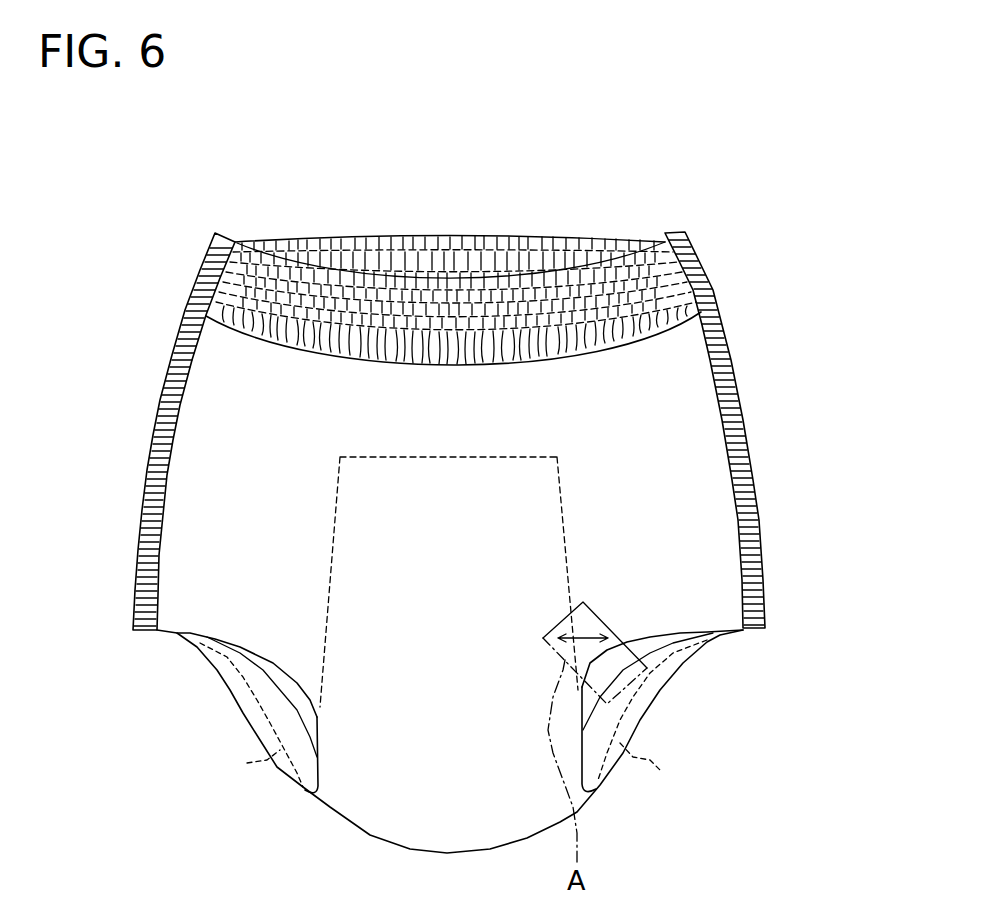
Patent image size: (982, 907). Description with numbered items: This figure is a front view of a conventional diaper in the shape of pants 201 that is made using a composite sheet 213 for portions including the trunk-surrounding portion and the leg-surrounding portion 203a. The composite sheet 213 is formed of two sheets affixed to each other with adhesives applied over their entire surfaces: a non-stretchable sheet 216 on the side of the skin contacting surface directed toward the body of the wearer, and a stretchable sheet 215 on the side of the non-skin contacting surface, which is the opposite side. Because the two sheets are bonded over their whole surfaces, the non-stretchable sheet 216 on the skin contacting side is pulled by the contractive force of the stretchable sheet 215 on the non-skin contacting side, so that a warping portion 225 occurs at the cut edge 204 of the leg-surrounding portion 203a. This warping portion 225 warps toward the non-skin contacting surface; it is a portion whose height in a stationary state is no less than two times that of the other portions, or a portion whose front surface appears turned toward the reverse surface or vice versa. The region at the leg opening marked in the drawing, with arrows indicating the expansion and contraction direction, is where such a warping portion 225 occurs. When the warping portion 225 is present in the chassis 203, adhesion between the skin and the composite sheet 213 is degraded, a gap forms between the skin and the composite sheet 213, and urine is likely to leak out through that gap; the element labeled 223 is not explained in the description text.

The diaper in the shape of pants 201 is at (581, 218).
The chassis 203 is at (700, 440).
The leg-surrounding portion 203a is at (212, 678).
The cut edge 204 is at (713, 635).
The composite sheet 213 is at (173, 503).
The stretchable sheet 215 is at (720, 492).
The non-stretchable sheet 216 is at (640, 705).
The waist region 223 is at (690, 405).
The warping portion 225 is at (297, 680).